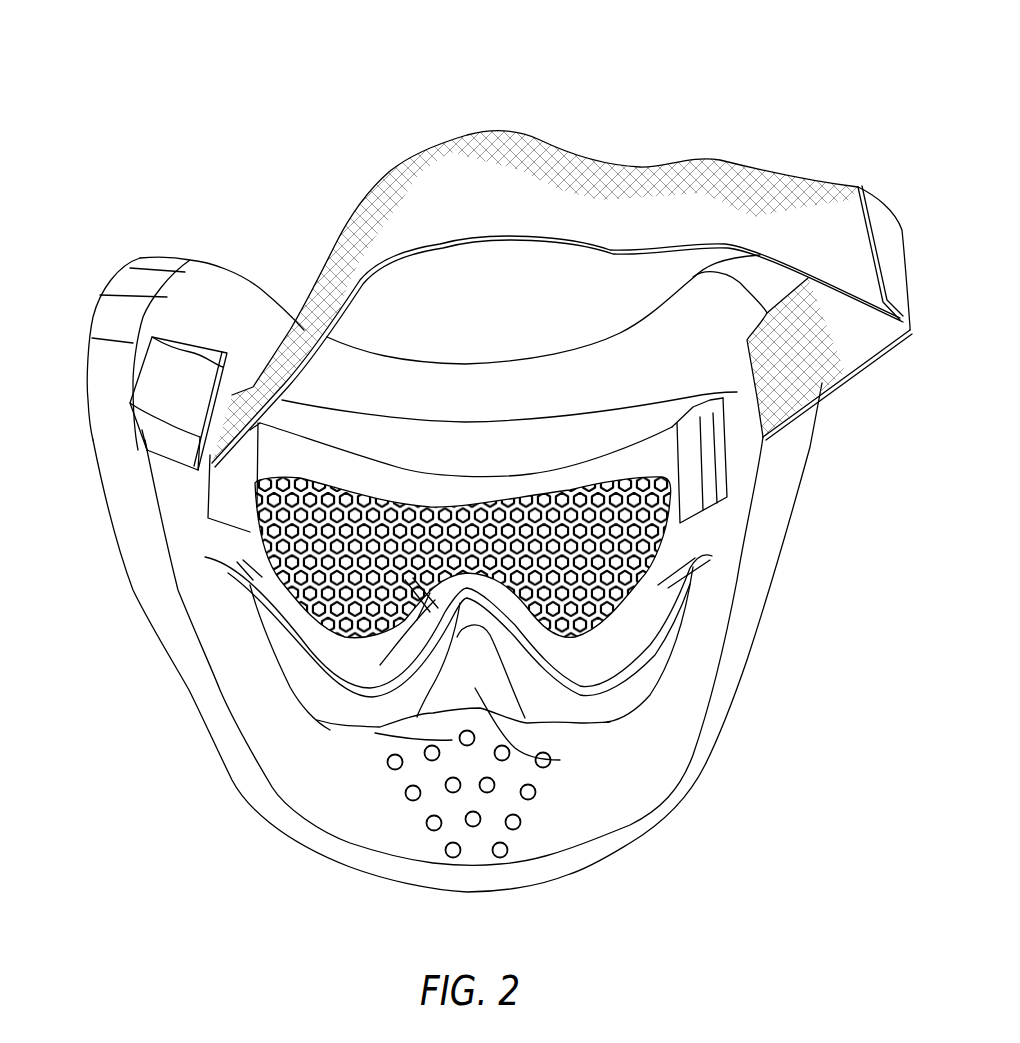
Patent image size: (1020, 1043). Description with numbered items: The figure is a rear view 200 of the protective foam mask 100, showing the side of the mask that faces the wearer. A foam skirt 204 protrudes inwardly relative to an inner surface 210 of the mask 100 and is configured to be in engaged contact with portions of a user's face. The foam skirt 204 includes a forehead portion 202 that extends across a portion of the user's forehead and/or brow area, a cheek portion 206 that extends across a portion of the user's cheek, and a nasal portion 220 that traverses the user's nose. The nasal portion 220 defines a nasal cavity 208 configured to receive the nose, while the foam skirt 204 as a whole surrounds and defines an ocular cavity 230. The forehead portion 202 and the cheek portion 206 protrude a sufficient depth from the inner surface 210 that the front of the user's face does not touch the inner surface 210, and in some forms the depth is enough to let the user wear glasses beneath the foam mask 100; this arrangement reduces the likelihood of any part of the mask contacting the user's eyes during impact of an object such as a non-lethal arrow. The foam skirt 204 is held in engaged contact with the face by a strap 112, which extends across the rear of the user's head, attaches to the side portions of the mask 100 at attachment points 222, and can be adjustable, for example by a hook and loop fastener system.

The protective foam mask 100 is at (230, 61).
The rear view 200 is at (196, 168).
The strap 112 is at (348, 223).
The attachment points 222 is at (133, 424).
The forehead portion 202 is at (443, 413).
The foam skirt 204 is at (525, 441).
The ocular cavity 230 is at (205, 557).
The inner surface 210 is at (722, 598).
The cheek portion 206 is at (233, 658).
The nasal portion 220 is at (361, 702).
The nasal cavity 208 is at (480, 738).